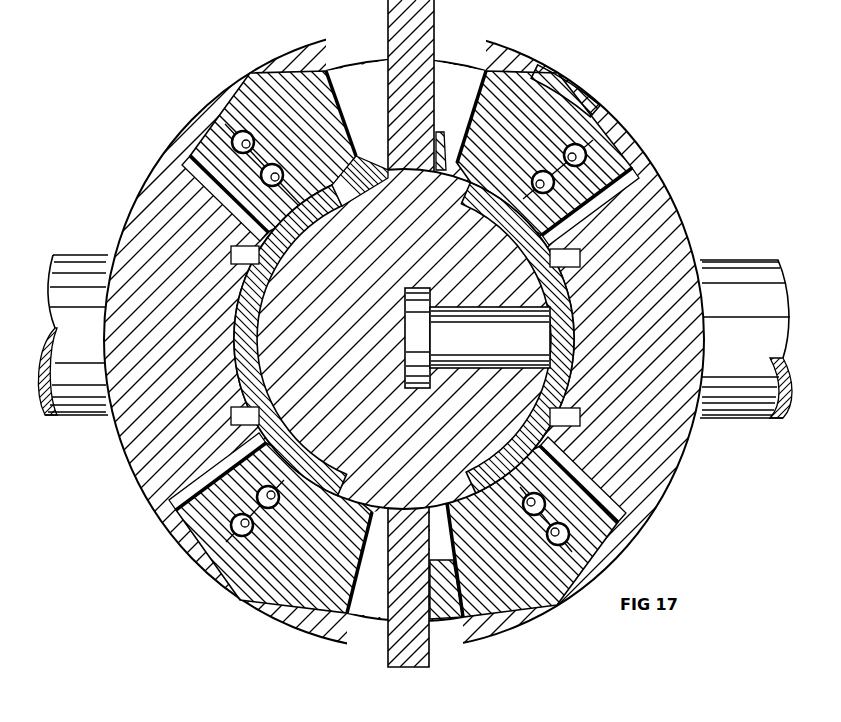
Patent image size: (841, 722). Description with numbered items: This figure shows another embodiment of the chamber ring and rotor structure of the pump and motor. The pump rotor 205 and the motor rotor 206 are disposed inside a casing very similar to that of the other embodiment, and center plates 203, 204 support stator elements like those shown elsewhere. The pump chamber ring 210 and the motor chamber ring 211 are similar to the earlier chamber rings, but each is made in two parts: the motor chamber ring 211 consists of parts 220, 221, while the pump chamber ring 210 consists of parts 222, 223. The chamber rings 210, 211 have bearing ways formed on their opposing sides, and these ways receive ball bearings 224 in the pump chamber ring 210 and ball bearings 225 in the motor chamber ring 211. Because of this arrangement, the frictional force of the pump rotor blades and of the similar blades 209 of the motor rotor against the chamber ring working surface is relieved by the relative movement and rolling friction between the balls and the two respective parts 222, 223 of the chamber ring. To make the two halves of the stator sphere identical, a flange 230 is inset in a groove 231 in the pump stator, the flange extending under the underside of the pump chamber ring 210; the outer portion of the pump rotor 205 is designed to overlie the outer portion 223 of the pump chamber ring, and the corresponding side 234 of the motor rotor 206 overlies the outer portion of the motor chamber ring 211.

The center plate 203 is at (389, 25).
The center plate 204 is at (433, 27).
The pump rotor 205 is at (140, 193).
The motor rotor 206 is at (733, 265).
The motor rotor blades 209 is at (197, 173).
The pump chamber ring 210 is at (307, 84).
The motor chamber ring 211 is at (504, 105).
The motor chamber ring part 220 is at (515, 88).
The motor chamber ring part 221 is at (605, 153).
The pump chamber ring part 222 is at (283, 93).
The pump chamber ring outer portion 223 is at (232, 142).
The ball bearings 224 is at (236, 136).
The ball bearings 225 is at (585, 142).
The flange 230 is at (243, 342).
The groove 231 is at (320, 196).
The motor rotor side 234 is at (562, 82).